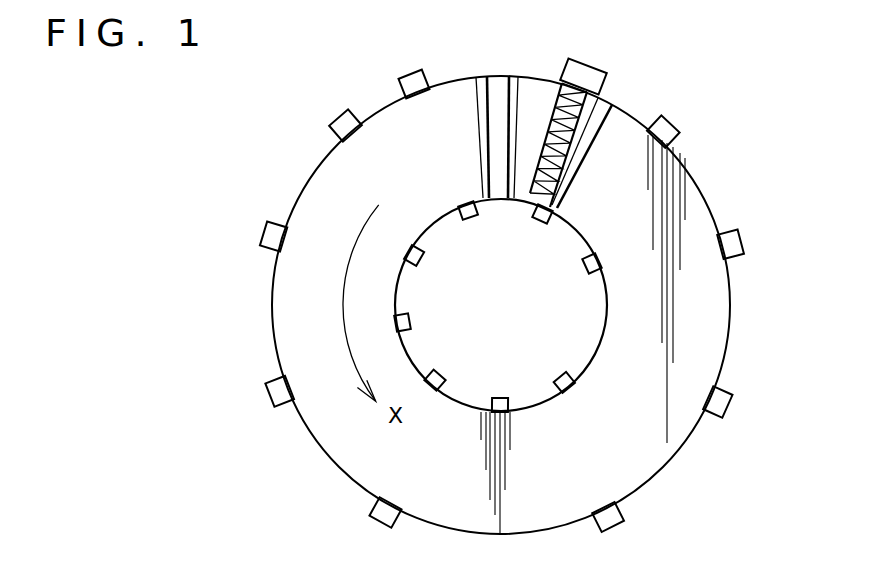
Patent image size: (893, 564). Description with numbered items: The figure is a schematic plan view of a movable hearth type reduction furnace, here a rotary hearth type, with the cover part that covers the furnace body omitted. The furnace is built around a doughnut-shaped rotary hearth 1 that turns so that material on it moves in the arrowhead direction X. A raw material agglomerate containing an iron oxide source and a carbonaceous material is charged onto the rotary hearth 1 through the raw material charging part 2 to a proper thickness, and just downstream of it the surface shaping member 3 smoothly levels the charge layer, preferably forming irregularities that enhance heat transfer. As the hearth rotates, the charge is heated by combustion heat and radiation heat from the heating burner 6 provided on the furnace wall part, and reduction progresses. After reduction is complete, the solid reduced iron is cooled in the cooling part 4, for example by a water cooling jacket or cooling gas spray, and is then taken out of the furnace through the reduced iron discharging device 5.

The rotary hearth 1 is at (700, 320).
The raw material charging part 2 is at (513, 78).
The surface shaping member 3 is at (478, 110).
The cooling part 4 is at (616, 100).
The reduced iron discharging device 5 is at (598, 64).
The heating burner 6 is at (676, 126).